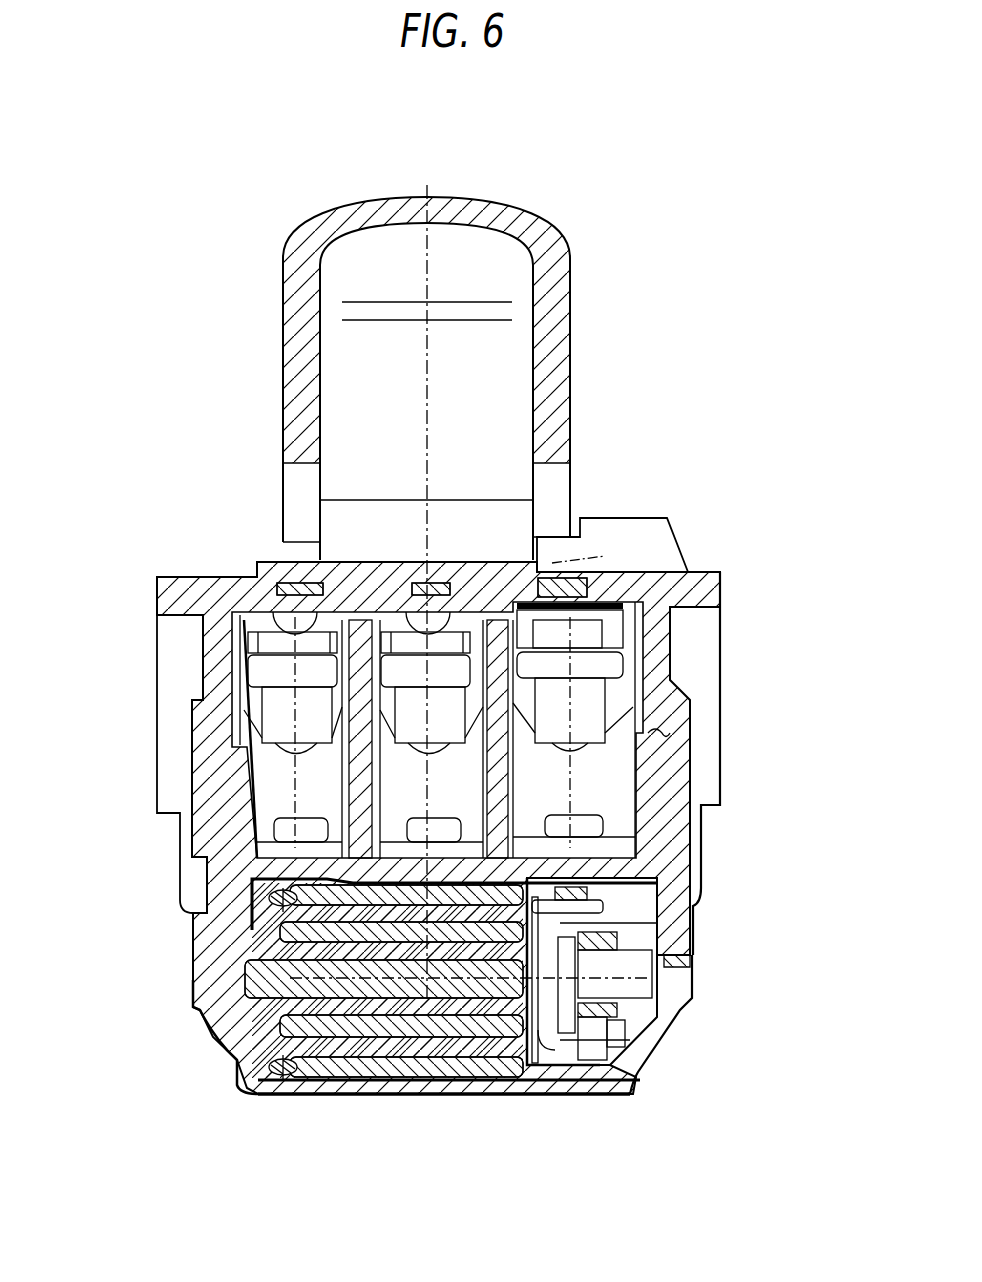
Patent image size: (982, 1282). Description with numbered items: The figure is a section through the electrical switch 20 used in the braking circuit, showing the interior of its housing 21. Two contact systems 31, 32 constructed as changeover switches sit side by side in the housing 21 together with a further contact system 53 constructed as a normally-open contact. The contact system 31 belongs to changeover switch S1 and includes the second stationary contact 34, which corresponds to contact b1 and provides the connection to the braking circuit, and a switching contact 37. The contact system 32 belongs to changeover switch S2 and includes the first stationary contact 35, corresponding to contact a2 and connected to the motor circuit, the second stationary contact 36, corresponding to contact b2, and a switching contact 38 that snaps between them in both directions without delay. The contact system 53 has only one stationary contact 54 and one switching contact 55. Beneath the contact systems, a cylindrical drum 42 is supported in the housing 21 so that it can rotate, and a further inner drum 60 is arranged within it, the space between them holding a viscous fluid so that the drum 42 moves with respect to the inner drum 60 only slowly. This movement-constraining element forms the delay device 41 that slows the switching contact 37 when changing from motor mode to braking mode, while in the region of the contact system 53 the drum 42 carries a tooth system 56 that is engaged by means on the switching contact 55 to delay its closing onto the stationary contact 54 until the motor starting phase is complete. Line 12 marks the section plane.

The center axis 12 is at (613, 245).
The electrical switch 20 is at (165, 470).
The housing 21 is at (700, 587).
The contact system 31 is at (288, 778).
The contact system 32 is at (235, 1063).
The second stationary contact 34 is at (273, 622).
The first stationary contact 35 is at (428, 858).
The second stationary contact 36 is at (413, 577).
The switching contact 37 is at (270, 672).
The switching contact 38 is at (668, 542).
The delay device 41 is at (210, 1078).
The cylindrical drum 42 is at (413, 1097).
The contact system 53 is at (600, 771).
The stationary contact 54 is at (682, 830).
The switching contact 55 is at (600, 664).
The tooth system 56 is at (590, 922).
The inner drum 60 is at (463, 1070).